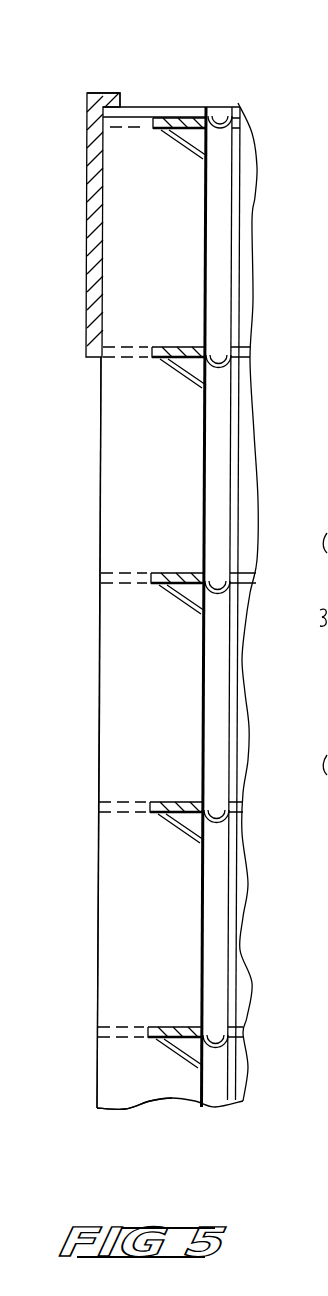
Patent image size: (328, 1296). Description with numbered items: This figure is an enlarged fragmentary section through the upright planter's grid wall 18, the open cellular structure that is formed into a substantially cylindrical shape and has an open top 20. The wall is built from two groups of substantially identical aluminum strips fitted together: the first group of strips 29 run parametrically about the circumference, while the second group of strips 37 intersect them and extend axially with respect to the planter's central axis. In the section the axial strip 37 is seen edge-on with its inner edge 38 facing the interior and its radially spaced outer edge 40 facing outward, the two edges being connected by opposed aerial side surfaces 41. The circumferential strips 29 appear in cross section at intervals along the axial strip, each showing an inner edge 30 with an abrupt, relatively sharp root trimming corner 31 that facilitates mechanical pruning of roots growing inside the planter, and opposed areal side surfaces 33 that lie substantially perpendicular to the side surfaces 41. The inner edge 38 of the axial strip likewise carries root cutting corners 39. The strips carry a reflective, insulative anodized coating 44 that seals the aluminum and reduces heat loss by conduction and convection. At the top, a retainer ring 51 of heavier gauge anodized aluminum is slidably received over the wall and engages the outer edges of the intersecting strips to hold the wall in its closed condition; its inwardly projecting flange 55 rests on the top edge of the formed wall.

The grid wall 18 is at (98, 378).
The top 20 is at (140, 107).
The first group of strips 29 is at (250, 354).
The inner edges 30 is at (208, 1032).
The root trimming corners 31 is at (205, 346).
The areal side surfaces 33 is at (176, 573).
The second group of strips 37 is at (122, 530).
The inner edges 38 is at (205, 752).
The root cutting corners 39 is at (208, 187).
The outer edges 40 is at (97, 762).
The aerial side surfaces 41 is at (140, 926).
The reflective, insulative coating 44 is at (140, 275).
The retainer ring 51 is at (87, 208).
The inwardly projecting flange 55 is at (105, 93).